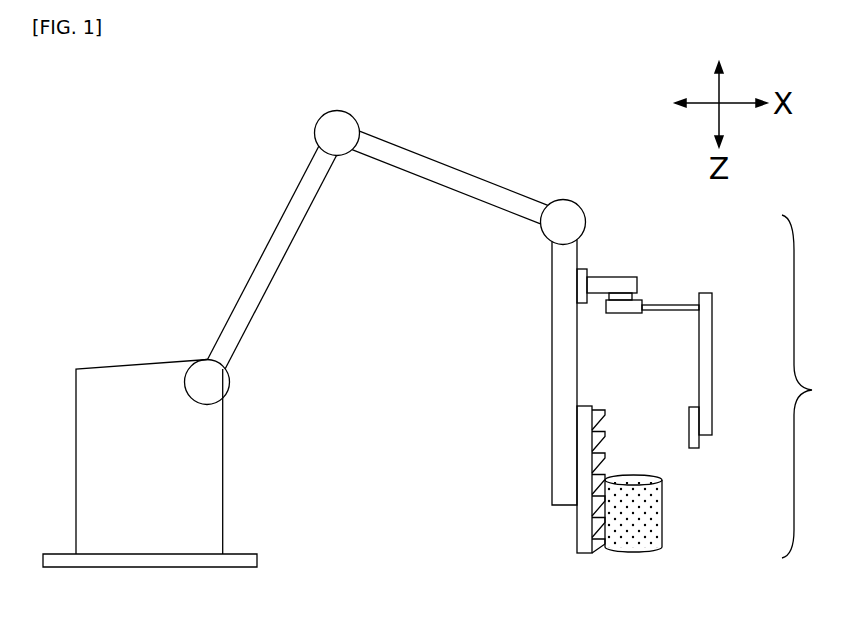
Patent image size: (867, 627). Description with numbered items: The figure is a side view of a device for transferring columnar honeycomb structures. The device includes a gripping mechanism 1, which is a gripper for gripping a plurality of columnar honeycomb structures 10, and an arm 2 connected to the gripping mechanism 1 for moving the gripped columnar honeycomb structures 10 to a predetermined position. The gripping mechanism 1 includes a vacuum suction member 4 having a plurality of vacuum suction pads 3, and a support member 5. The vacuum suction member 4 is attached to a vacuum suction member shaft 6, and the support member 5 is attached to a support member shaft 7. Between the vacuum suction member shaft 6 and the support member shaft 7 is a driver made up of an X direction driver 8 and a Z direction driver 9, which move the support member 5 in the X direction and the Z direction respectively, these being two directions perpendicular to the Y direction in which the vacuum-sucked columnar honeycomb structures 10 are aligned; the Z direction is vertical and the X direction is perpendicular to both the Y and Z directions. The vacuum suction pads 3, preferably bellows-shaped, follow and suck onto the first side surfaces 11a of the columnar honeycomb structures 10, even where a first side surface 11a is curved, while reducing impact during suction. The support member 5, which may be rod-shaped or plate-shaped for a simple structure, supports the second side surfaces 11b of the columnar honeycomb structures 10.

The gripping mechanism 1 is at (812, 386).
The arm 2 is at (452, 175).
The vacuum suction pad 3 is at (597, 420).
The vacuum suction member 4 is at (585, 525).
The support member 5 is at (696, 438).
The vacuum suction member shaft 6 is at (558, 375).
The support member shaft 7 is at (707, 345).
The X direction driver 8 is at (670, 305).
The Z direction driver 9 is at (582, 278).
The columnar honeycomb structure 10 is at (647, 538).
The first side surface 11a is at (605, 512).
The second side surface 11b is at (663, 508).